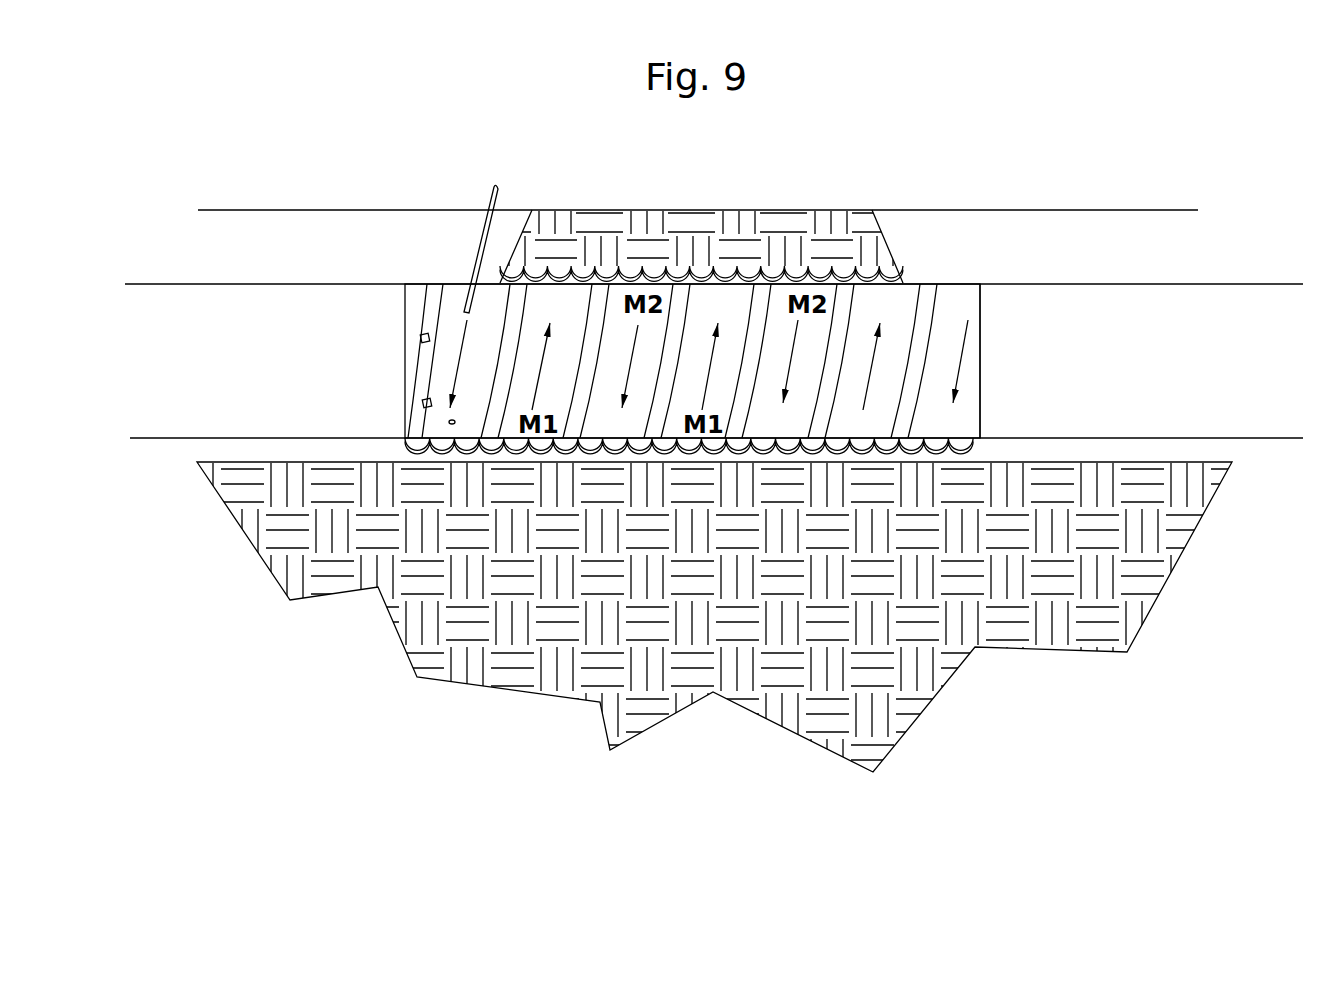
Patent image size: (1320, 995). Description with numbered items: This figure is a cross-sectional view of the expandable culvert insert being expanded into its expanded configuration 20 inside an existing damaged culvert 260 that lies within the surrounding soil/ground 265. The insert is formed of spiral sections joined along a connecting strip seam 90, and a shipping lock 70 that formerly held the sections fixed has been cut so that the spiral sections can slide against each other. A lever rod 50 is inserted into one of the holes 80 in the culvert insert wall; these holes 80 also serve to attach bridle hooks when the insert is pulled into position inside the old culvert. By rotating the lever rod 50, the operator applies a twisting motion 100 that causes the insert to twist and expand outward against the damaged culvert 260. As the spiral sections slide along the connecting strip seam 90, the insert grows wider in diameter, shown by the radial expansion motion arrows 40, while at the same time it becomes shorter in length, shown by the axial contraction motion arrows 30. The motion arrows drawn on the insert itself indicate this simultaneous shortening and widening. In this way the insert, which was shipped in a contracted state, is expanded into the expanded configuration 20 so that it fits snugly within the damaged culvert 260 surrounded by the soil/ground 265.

The expandable culvert insert in expanded configuration 20 is at (430, 232).
The axial contraction motion 30 is at (380, 357).
The radial expansion motion 40 is at (162, 280).
The lever rod 50 is at (497, 192).
The cut shipping lock 70 is at (421, 336).
The holes in culvert insert wall 80 is at (464, 310).
The connecting strip seam 90 is at (415, 390).
The twisting motion 100 is at (963, 353).
The existing damaged culvert 260 is at (877, 266).
The soil/ground 265 is at (785, 220).